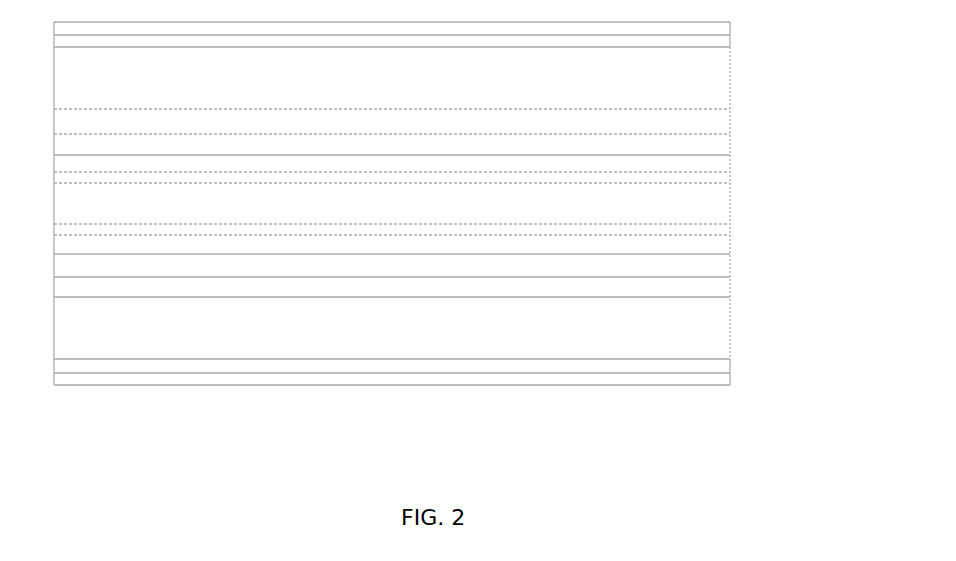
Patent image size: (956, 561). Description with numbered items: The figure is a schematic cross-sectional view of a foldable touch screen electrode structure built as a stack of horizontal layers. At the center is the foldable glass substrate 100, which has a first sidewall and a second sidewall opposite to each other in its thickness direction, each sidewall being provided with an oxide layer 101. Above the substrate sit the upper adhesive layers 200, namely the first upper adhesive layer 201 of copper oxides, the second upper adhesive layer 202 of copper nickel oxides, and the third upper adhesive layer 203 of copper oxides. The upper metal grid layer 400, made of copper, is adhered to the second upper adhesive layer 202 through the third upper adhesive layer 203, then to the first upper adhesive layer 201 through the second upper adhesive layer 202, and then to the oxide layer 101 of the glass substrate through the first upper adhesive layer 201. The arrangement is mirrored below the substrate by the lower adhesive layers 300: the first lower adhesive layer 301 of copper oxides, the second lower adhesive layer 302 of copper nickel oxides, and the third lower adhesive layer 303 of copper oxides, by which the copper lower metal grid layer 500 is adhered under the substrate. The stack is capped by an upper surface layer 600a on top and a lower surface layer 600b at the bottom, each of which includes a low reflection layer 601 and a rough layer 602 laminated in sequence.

The low reflection layer 601 is at (730, 28).
The rough layer 602 is at (730, 40).
The upper surface layer 600a is at (811, 22).
The upper metal grid layer 400 is at (730, 85).
The third upper adhesive layer 203 is at (730, 120).
The second upper adhesive layer 202 is at (732, 135).
The first upper adhesive layer 201 is at (730, 163).
The upper adhesive layers 200 is at (812, 95).
The oxide layer 101 is at (87, 180).
The foldable glass substrate 100 is at (730, 205).
The first lower adhesive layer 301 is at (722, 247).
The second lower adhesive layer 302 is at (725, 270).
The third lower adhesive layer 303 is at (730, 295).
The lower adhesive layers 300 is at (819, 232).
The lower metal grid layer 500 is at (730, 338).
The lower surface layer 600b is at (730, 372).